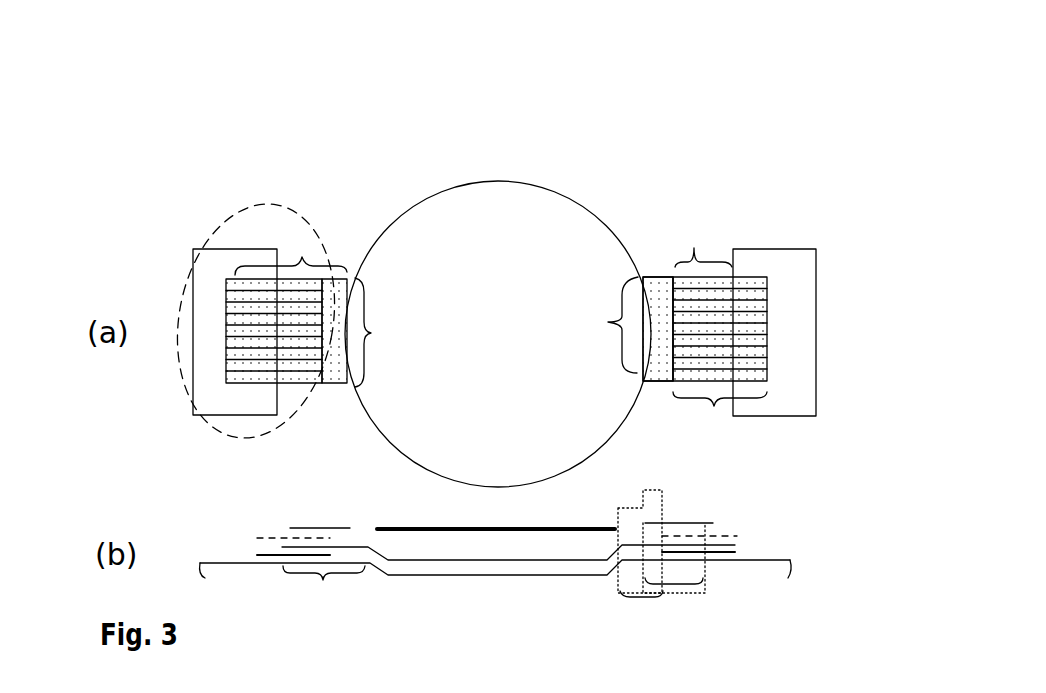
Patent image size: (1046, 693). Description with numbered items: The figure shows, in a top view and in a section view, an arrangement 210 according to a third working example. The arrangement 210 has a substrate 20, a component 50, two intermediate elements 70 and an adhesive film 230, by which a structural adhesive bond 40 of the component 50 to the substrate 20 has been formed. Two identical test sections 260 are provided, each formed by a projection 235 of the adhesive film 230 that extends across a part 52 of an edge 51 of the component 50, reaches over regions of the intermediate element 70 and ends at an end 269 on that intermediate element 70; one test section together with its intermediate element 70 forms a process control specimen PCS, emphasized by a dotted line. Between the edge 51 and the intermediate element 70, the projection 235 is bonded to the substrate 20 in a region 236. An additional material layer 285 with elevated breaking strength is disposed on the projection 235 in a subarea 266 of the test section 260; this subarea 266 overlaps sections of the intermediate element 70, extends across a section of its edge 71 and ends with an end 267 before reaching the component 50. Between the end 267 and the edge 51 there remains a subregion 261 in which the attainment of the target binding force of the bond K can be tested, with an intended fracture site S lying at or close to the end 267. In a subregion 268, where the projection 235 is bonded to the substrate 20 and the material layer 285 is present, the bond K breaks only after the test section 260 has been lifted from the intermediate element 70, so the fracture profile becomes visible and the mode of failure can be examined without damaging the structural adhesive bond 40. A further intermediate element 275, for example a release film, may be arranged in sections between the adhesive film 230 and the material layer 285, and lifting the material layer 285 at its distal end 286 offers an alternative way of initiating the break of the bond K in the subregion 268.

The arrangement 210 is at (742, 92).
The substrate 20 is at (378, 228).
The structural adhesive bond 40 is at (437, 568).
The component 50 is at (548, 184).
The edge 51 is at (639, 268).
The part 52 is at (496, 332).
The intermediate element 70 is at (231, 262).
The edge 71 is at (728, 262).
The adhesive film 230 is at (657, 275).
The projection 235 is at (324, 593).
The region 236 is at (655, 597).
The test section 260 is at (302, 257).
The subregion 261 is at (648, 453).
The subarea 266 is at (740, 413).
The end 267 is at (334, 315).
The subregion 268 is at (632, 507).
The end 269 is at (183, 286).
The further intermediate element 275 is at (282, 544).
The additional material layer 285 is at (754, 287).
The distal end 286 is at (294, 520).
The process control specimen PCS is at (263, 199).
The intended fracture site S is at (314, 390).
The bond K is at (520, 567).